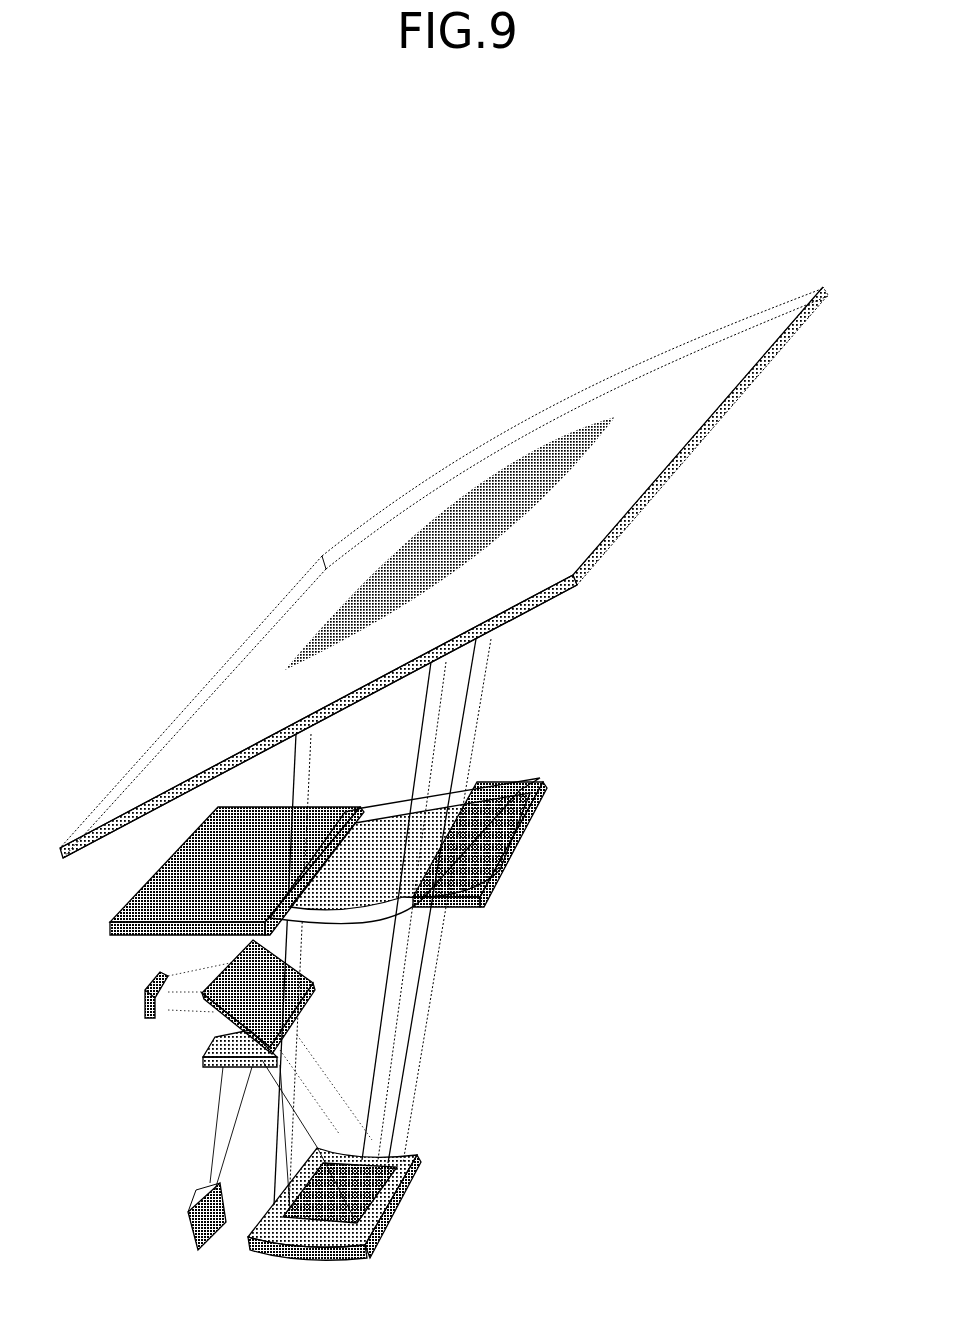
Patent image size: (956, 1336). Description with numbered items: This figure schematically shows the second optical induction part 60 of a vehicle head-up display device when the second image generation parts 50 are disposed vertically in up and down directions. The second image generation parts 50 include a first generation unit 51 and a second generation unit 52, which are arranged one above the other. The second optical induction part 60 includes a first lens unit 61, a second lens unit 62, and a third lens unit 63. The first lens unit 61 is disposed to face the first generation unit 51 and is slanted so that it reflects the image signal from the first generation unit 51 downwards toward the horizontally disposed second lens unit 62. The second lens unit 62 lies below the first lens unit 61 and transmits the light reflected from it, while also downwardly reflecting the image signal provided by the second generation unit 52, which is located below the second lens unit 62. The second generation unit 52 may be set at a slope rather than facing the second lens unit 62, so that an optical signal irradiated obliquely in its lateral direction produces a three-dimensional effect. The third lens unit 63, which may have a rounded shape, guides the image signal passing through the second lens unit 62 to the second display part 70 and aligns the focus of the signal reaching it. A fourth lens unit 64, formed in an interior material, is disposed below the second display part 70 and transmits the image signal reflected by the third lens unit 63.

The second display part 70 is at (523, 480).
The second optical induction part 60 is at (369, 949).
The first lens unit 61 is at (253, 990).
The second lens unit 62 is at (262, 1058).
The third lens unit 63 is at (406, 1204).
The fourth lens unit 64 is at (397, 917).
The second image generation parts 50 is at (136, 1106).
The first generation unit 51 is at (145, 1000).
The second generation unit 52 is at (167, 1199).